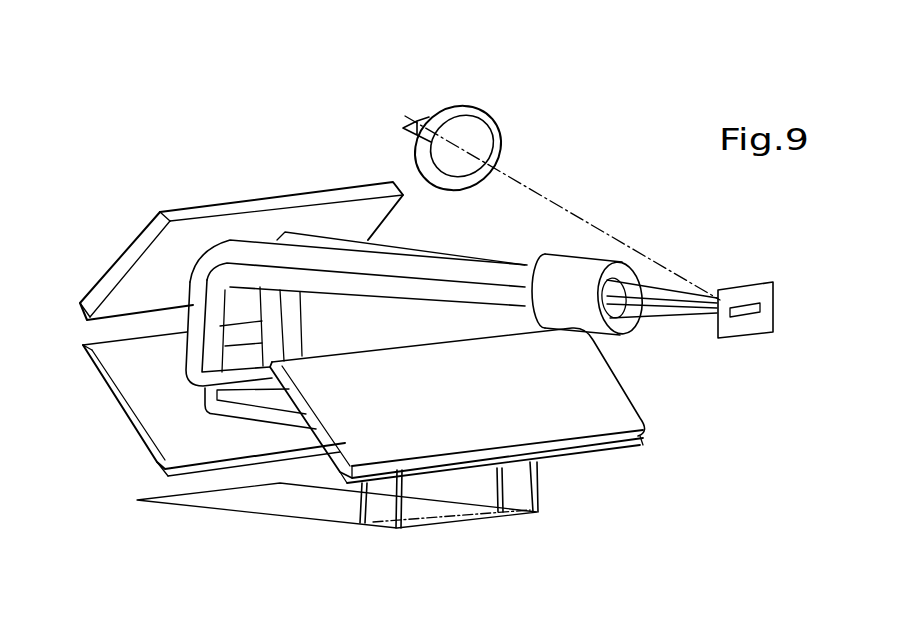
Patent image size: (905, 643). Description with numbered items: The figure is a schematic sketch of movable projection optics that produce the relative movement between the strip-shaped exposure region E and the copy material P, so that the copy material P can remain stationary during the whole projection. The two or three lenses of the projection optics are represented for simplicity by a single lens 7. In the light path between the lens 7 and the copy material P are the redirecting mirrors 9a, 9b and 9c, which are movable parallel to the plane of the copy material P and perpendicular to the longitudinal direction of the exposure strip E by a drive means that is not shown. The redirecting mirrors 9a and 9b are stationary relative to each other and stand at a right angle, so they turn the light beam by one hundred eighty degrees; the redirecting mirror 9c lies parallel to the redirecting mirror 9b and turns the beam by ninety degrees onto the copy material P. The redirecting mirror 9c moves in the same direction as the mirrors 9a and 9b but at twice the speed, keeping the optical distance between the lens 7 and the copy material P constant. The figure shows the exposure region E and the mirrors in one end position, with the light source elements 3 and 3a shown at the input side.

The redirecting mirror 9a is at (147, 268).
The redirecting mirror 9b is at (150, 407).
The redirecting mirror 9c is at (580, 415).
The lens 7 is at (582, 305).
The slit plate 3 is at (730, 328).
The light source lens ring 3a is at (432, 125).
The copy material P is at (277, 499).
The exposure region E is at (467, 520).